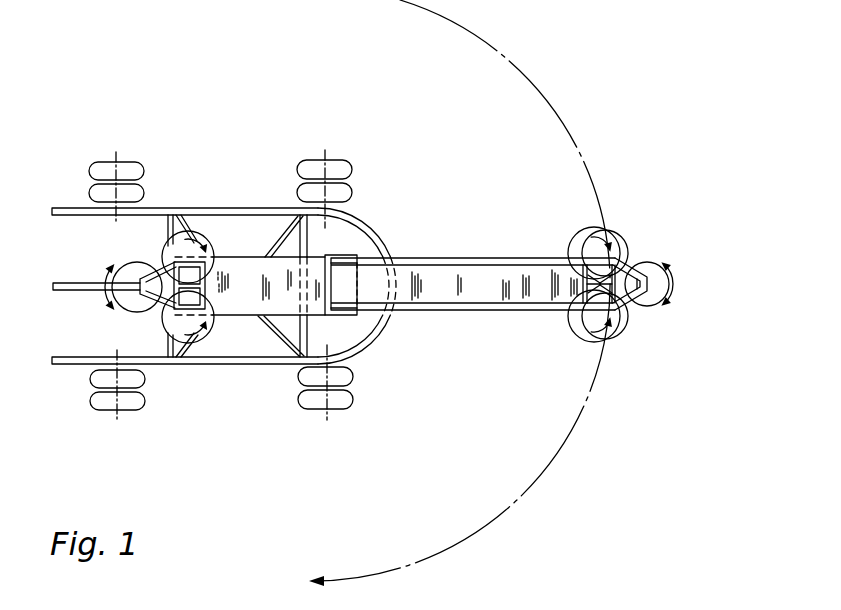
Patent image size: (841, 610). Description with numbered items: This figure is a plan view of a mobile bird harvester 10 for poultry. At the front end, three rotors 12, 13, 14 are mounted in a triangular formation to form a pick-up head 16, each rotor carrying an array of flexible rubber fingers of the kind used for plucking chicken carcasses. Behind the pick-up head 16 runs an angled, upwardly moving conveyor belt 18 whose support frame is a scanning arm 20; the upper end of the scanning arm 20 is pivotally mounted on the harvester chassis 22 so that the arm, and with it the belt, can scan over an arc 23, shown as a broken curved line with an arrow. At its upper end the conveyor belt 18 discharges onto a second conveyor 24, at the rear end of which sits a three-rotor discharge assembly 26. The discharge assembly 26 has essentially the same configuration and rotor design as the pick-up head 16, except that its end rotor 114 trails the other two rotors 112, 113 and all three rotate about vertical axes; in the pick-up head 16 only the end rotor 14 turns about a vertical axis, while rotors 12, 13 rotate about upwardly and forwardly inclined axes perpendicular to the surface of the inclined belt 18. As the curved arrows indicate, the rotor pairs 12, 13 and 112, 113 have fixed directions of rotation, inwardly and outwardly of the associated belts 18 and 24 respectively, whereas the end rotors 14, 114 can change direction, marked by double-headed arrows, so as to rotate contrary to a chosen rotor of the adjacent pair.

The mobile bird harvester 10 is at (229, 160).
The rotor 12 is at (606, 233).
The rotor 13 is at (616, 333).
The end rotor 14 is at (651, 262).
The pick-up head 16 is at (565, 215).
The conveyor belt 18 is at (436, 293).
The scanning arm 20 is at (424, 259).
The harvester chassis 22 is at (213, 365).
The arc 23 is at (541, 90).
The second conveyor 24 is at (262, 300).
The discharge assembly 26 is at (104, 327).
The rotor 112 is at (192, 337).
The rotor 113 is at (185, 240).
The end rotor 114 is at (135, 265).